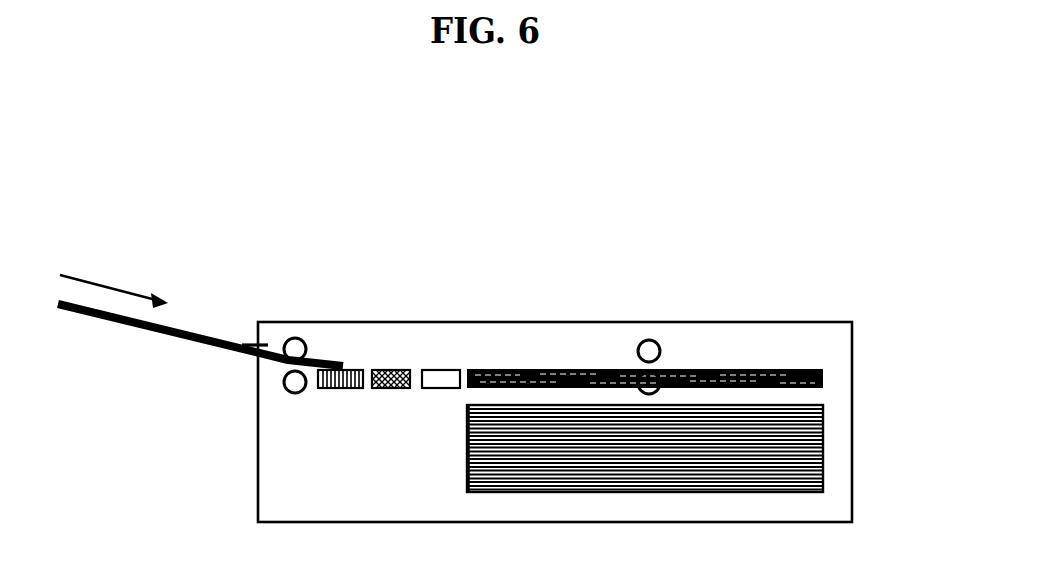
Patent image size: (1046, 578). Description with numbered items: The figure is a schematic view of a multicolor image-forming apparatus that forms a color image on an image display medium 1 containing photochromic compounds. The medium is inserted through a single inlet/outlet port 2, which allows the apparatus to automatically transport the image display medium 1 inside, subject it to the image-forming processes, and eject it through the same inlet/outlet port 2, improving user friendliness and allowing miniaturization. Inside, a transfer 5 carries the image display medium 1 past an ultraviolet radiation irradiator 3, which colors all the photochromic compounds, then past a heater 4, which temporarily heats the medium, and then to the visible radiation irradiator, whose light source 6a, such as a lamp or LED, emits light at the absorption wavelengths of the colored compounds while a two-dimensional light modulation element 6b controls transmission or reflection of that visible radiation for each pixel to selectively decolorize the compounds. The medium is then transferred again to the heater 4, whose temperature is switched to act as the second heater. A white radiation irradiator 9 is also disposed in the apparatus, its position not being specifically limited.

The image display medium 1 is at (182, 344).
The inlet/outlet port 2 is at (252, 343).
The ultraviolet radiation irradiator 3 is at (353, 367).
The heater 4 is at (397, 368).
The transfer 5 is at (305, 342).
The white radiation irradiator 9 is at (442, 367).
The light source 6a is at (467, 450).
The two-dimensional light modulation element 6b is at (683, 368).